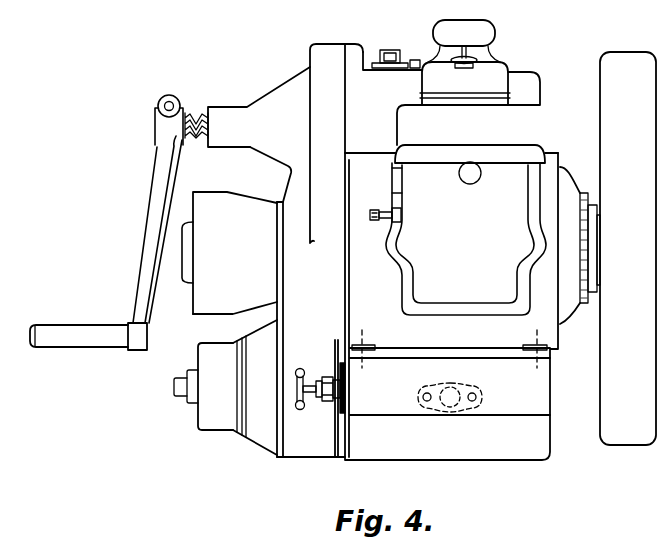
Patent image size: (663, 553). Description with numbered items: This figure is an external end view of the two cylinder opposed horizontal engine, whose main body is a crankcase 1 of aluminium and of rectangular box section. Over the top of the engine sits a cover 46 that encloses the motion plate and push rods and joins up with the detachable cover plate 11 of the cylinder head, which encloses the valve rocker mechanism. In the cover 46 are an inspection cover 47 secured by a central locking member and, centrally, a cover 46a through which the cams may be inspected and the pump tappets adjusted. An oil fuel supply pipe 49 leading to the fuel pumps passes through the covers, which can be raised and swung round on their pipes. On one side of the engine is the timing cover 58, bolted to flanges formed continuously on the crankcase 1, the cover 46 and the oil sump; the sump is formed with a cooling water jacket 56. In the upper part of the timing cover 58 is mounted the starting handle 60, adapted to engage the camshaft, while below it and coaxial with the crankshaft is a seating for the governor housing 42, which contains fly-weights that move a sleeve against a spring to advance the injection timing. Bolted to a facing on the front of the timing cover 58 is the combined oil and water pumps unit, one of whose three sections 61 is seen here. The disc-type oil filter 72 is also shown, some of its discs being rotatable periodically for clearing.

The crankcase 1 is at (355, 309).
The cover plate 11 is at (470, 302).
The housing 42 is at (232, 192).
The cover 46 is at (530, 118).
The cover 46a is at (413, 58).
The inspection cover 47 is at (495, 77).
The oil fuel supply pipe 49 is at (477, 52).
The cooling water jacket 56 is at (456, 388).
The timing cover 58 is at (312, 62).
The starting handle 60 is at (155, 151).
The section of pump unit 61 is at (258, 439).
The oil filter 72 is at (337, 413).